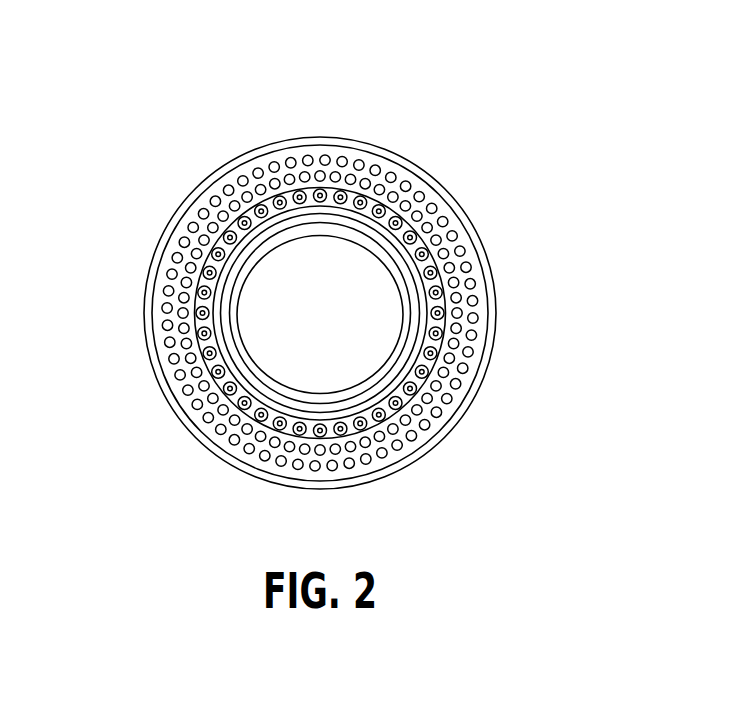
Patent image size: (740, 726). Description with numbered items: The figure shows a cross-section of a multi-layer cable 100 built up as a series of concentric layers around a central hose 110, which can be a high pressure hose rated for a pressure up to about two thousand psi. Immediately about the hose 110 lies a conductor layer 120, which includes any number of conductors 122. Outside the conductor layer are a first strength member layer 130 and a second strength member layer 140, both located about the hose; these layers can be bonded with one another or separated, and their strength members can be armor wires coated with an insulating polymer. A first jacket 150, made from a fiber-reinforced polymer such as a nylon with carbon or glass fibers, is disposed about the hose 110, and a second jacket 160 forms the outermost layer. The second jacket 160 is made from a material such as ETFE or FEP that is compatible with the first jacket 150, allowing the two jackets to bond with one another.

The cable 100 is at (299, 101).
The hose 110 is at (363, 382).
The conductor layer 120 is at (438, 364).
The conductors 122 is at (243, 403).
The first strength member layer 130 is at (412, 212).
The second strength member layer 140 is at (358, 165).
The first jacket 150 is at (172, 233).
The second jacket 160 is at (216, 167).